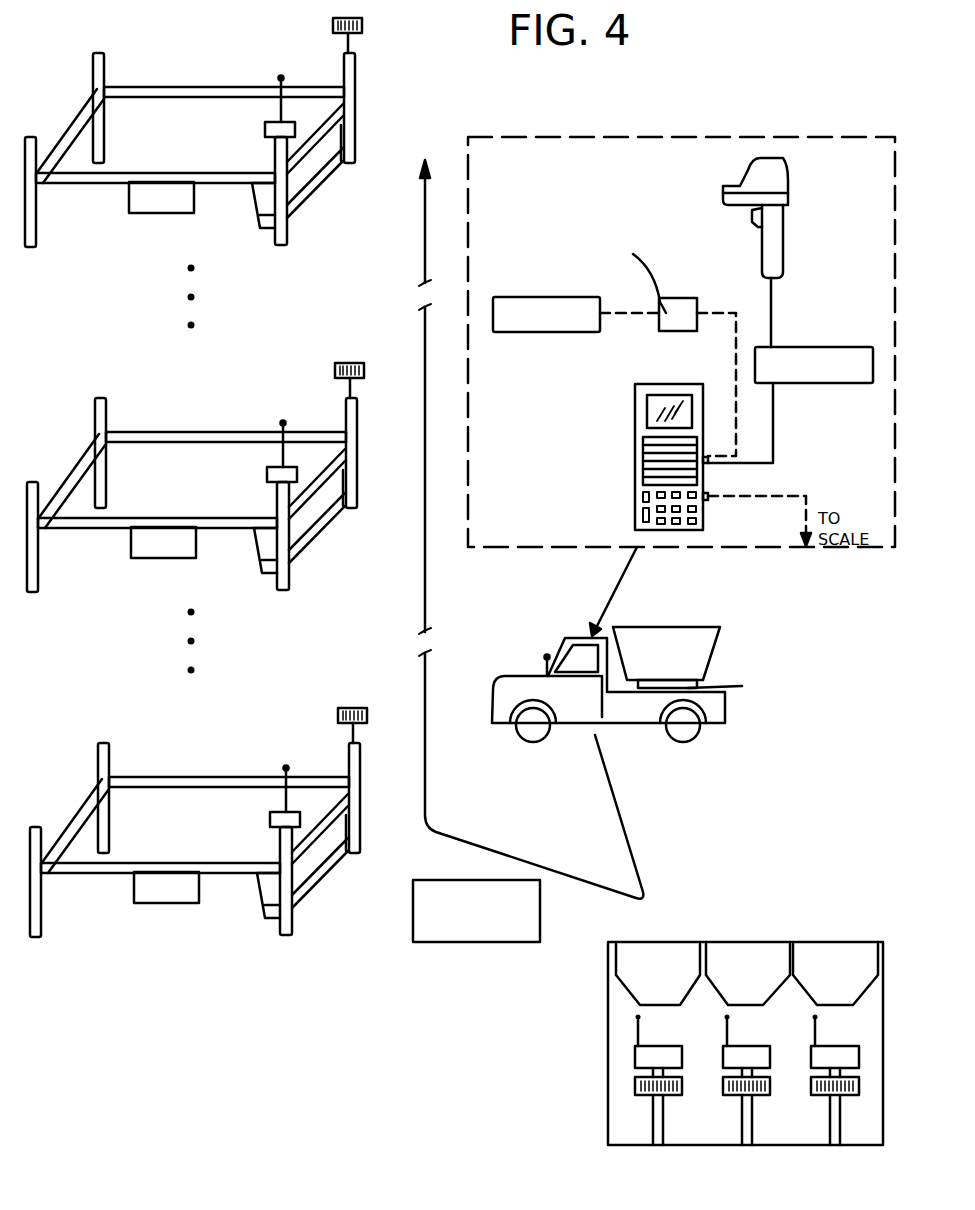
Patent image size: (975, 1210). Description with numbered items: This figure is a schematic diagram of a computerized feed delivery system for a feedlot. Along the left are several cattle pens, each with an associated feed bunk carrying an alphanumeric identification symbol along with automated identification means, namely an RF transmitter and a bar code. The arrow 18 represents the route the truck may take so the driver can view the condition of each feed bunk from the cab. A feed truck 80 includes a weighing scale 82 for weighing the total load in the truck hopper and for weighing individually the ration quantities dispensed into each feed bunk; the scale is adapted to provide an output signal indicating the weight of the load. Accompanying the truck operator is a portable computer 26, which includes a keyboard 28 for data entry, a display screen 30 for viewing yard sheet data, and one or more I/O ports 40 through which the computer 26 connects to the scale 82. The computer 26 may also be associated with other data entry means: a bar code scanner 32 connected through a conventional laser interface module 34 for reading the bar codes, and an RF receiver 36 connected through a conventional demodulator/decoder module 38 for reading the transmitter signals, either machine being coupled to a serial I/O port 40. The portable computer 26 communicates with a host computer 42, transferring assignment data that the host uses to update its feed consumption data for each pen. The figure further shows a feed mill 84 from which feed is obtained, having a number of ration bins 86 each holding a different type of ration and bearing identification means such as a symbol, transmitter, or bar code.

The route 18 is at (420, 566).
The portable computer 26 is at (624, 460).
The keyboard 28 is at (692, 517).
The display screen 30 is at (648, 412).
The bar code scanner 32 is at (789, 178).
The laser interface module 34 is at (853, 347).
The RF receiver 36 is at (551, 333).
The demodulator/decoder module 38 is at (668, 312).
The serial I/O port 40 is at (712, 496).
The host computer 42 is at (540, 908).
The feed truck 80 is at (528, 655).
The weighing scale 82 is at (652, 689).
The feed mill 84 is at (787, 922).
The ration bins 86 is at (728, 948).